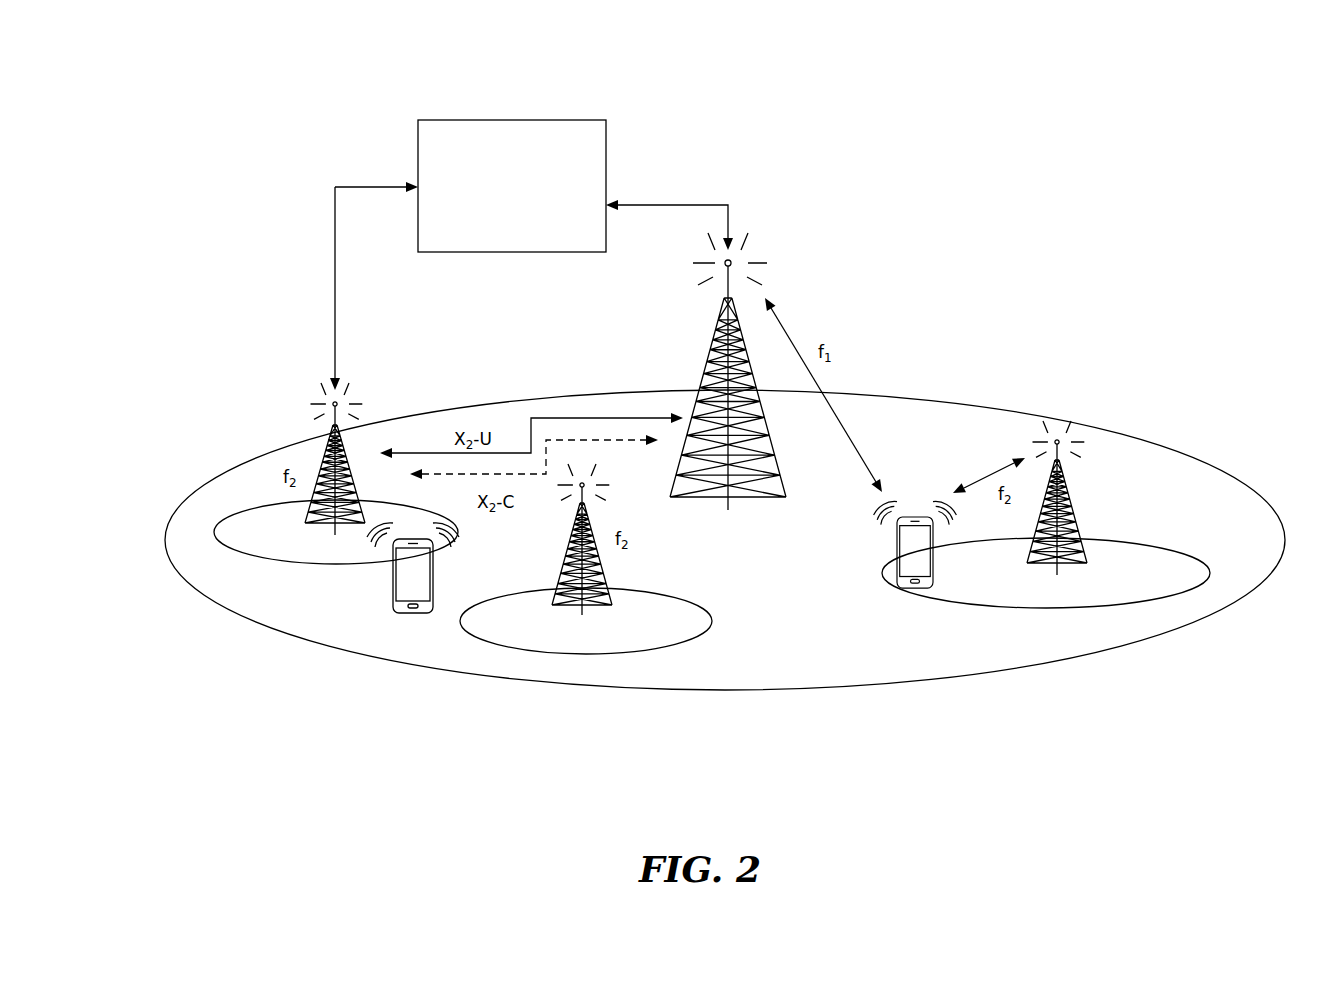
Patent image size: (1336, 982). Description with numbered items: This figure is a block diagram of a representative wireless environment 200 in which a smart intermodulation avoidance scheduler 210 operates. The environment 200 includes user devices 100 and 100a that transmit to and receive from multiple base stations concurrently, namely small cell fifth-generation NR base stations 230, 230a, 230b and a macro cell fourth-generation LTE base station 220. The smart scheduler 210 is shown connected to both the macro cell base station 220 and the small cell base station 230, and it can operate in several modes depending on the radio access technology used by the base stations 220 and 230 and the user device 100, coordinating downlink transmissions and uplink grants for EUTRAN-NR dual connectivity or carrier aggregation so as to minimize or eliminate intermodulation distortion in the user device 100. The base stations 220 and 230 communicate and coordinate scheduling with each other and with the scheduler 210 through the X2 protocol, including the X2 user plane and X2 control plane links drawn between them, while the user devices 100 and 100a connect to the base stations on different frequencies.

The wireless environment 200 is at (198, 100).
The smart intermodulation avoidance scheduler 210 is at (542, 118).
The macro cell 4G LTE base station 220 is at (787, 260).
The small cell 5G NR base station 230 is at (278, 474).
The small cell 5G NR base station 230a is at (572, 660).
The small cell 5G NR base station 230b is at (1058, 603).
The user device 100 is at (412, 628).
The user device 100a is at (897, 556).